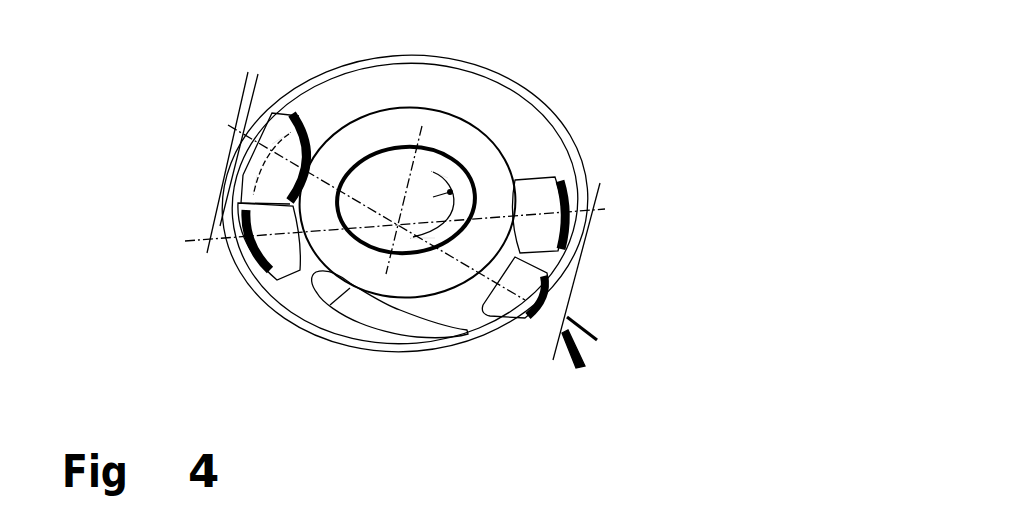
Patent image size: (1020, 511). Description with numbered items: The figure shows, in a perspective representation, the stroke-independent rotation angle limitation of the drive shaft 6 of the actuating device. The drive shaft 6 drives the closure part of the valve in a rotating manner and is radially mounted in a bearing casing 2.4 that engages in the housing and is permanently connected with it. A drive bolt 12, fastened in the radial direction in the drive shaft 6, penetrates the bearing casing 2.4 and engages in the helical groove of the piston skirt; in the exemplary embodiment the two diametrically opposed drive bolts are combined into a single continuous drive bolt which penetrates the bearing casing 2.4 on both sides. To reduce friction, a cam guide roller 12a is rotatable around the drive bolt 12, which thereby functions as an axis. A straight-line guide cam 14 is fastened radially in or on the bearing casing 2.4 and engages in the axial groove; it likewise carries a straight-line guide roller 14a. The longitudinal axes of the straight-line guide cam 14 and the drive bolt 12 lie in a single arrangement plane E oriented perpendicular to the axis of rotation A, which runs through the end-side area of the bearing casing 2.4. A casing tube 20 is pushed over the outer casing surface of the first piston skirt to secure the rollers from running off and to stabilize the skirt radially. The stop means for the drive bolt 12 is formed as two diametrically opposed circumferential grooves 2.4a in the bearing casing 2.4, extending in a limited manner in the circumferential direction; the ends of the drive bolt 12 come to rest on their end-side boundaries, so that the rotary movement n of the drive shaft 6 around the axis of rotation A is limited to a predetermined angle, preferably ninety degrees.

The drive shaft 6 is at (468, 186).
The bearing casing 2.4 is at (473, 157).
The circumferential groove 2.4a is at (325, 288).
The axis of rotation A is at (412, 160).
The arrangement plane E is at (363, 205).
The rotary movement n is at (262, 162).
The drive bolt 12 is at (335, 137).
The cam guide roller 12a is at (280, 119).
The straight-line guide cam 14 is at (310, 232).
The straight-line guide roller 14a is at (263, 213).
The casing tube 20 is at (280, 295).